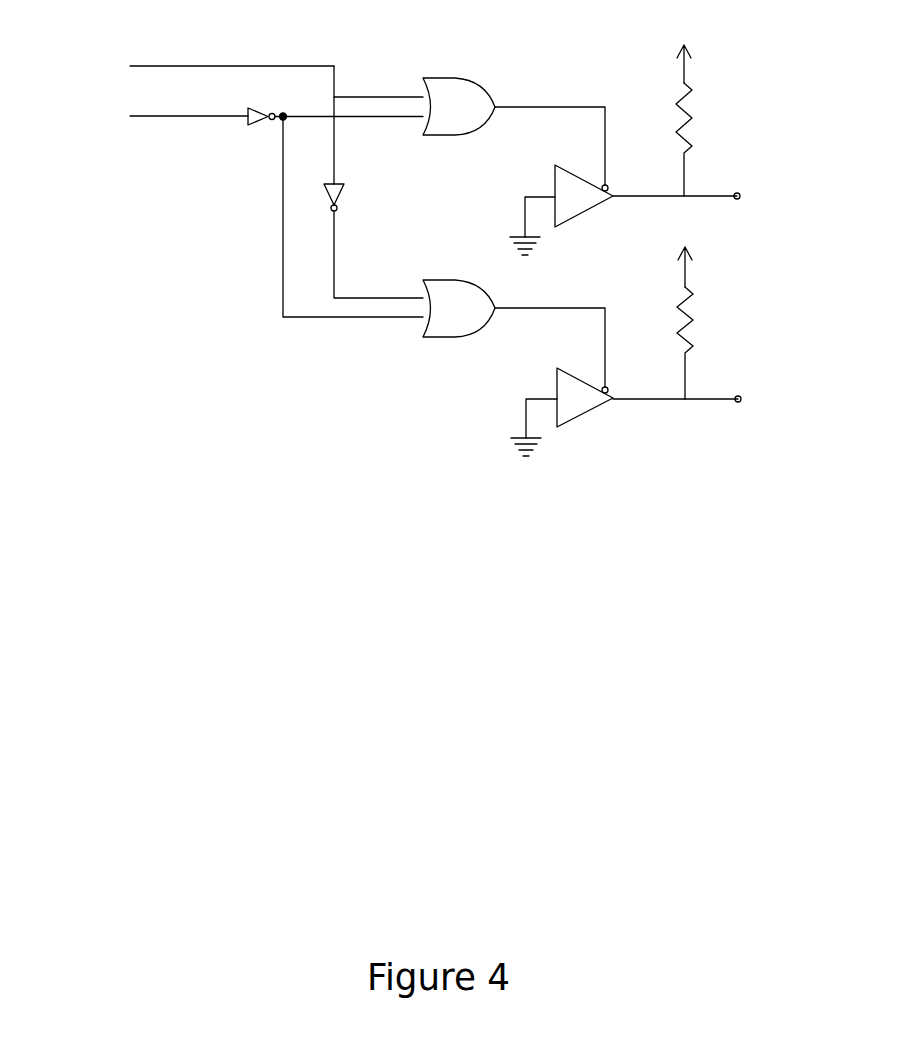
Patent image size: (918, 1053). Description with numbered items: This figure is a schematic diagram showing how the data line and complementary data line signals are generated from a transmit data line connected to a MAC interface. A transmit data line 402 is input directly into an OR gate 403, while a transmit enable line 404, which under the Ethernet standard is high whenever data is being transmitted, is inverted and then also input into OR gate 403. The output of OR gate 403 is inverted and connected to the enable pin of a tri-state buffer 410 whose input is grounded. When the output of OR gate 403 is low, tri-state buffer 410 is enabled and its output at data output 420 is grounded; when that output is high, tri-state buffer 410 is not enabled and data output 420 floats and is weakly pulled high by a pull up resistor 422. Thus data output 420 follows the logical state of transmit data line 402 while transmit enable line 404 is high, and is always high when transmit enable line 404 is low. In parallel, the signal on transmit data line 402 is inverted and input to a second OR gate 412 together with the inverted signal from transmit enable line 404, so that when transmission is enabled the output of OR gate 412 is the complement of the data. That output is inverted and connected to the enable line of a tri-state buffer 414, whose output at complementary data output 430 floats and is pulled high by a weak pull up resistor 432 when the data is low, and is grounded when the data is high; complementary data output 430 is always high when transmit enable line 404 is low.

The transmit data line 402 is at (122, 50).
The transmit enable line 404 is at (122, 100).
The OR gate 403 is at (443, 76).
The OR gate 412 is at (438, 278).
The tri-state buffer 410 is at (594, 212).
The tri-state buffer 414 is at (594, 414).
The pull up resistor 422 is at (693, 119).
The pull up resistor 432 is at (694, 320).
The data output 420 is at (738, 206).
The complementary data output 430 is at (739, 409).